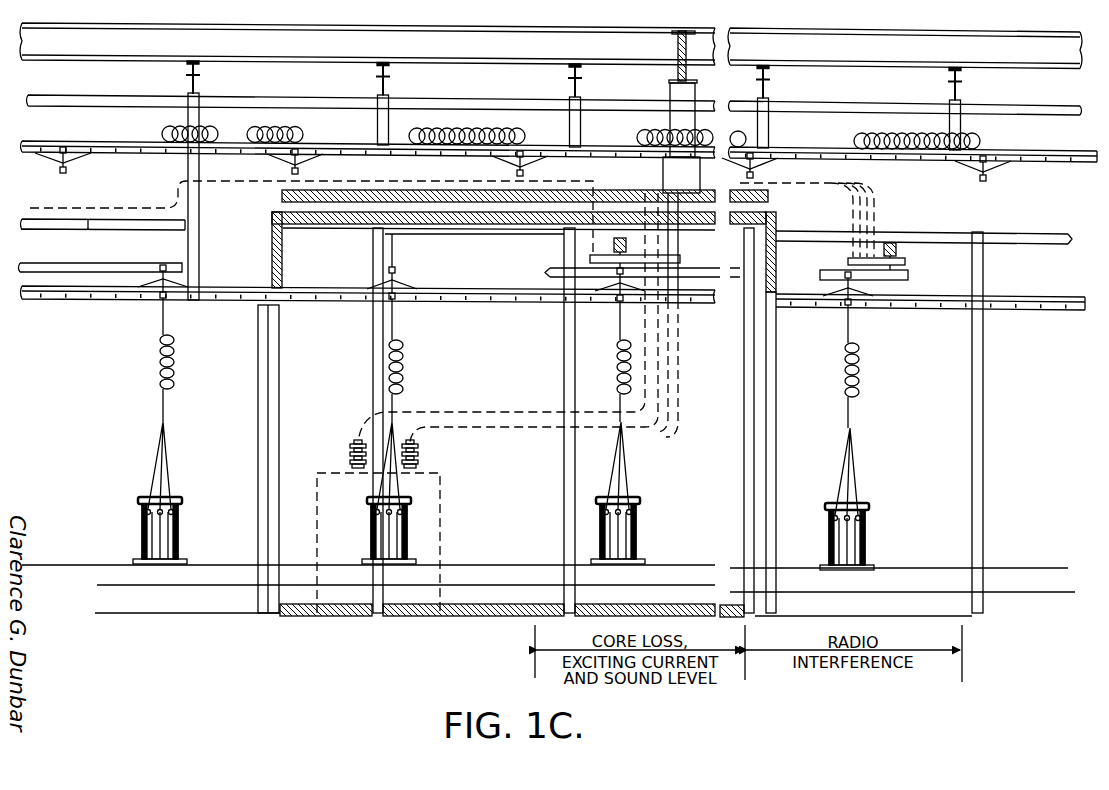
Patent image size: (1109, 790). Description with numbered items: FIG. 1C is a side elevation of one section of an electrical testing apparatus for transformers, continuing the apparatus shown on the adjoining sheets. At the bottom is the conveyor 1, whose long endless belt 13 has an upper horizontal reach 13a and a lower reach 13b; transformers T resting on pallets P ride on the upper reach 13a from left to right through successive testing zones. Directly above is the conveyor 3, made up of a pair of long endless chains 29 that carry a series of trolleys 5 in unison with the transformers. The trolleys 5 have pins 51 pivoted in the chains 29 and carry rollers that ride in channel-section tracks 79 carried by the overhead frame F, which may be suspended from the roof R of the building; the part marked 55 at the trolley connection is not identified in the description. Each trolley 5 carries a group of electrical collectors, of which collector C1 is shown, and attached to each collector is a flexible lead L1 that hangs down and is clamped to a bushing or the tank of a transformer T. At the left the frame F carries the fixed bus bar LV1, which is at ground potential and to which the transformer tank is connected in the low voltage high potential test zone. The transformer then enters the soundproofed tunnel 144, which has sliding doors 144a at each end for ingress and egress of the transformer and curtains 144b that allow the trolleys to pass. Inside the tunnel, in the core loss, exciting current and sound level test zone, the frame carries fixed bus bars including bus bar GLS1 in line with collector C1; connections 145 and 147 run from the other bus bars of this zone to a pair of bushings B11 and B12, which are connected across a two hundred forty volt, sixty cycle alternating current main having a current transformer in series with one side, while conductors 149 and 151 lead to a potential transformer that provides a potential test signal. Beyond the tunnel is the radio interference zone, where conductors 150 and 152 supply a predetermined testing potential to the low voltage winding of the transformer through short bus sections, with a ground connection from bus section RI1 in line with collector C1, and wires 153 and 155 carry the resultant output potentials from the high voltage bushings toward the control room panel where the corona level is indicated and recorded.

The roof R is at (450, 65).
The overhead frame F is at (199, 163).
The conveyor 3 is at (1061, 163).
The channel-section tracks 79 is at (252, 143).
The tunnel 144 is at (280, 196).
The curtains 144b is at (274, 254).
The sliding doors 144a is at (262, 442).
The endless chains 29 is at (314, 291).
The fixed bus bar LV1 is at (55, 268).
The wire 153 is at (836, 194).
The conductor 150 is at (850, 218).
The conductor 152 is at (897, 210).
The wire 155 is at (878, 226).
The conductor 149 is at (668, 345).
The conductor 151 is at (678, 372).
The connection 145 is at (466, 410).
The connection 147 is at (503, 427).
The fixed bus bar GLS1 is at (706, 275).
The ground connection bus section RI1 is at (912, 278).
The collector C1 is at (67, 171).
The trolleys 5 is at (88, 157).
The pins 51 is at (64, 147).
The bus connection 55 is at (56, 152).
The lead L1 is at (65, 142).
The transformers T is at (177, 532).
The pallets P is at (252, 560).
The bushing B11 is at (353, 441).
The bushing B12 is at (420, 450).
The endless belt 13 is at (680, 570).
The upper horizontal reach 13a is at (111, 554).
The lower reach 13b is at (585, 599).
The conveyor 1 is at (225, 590).